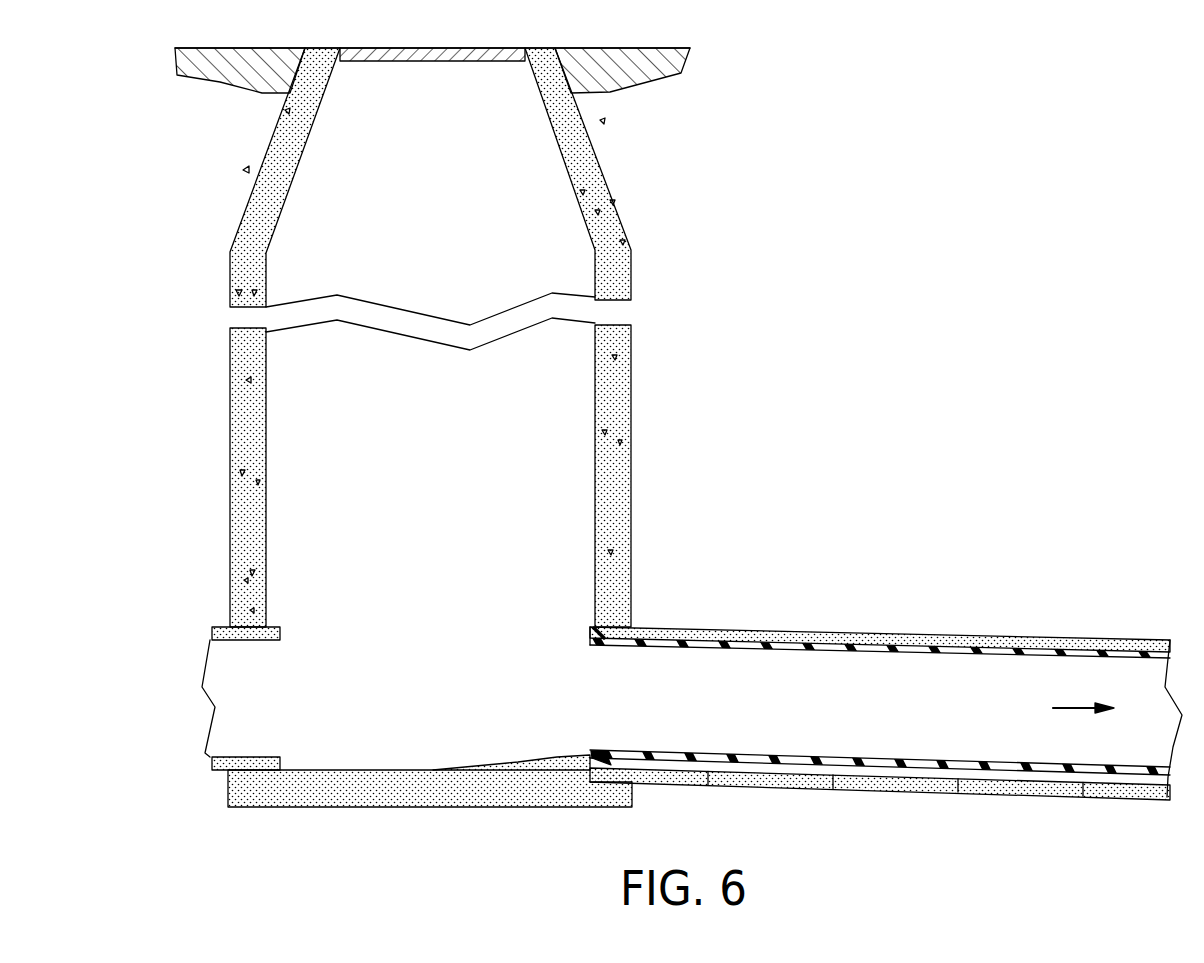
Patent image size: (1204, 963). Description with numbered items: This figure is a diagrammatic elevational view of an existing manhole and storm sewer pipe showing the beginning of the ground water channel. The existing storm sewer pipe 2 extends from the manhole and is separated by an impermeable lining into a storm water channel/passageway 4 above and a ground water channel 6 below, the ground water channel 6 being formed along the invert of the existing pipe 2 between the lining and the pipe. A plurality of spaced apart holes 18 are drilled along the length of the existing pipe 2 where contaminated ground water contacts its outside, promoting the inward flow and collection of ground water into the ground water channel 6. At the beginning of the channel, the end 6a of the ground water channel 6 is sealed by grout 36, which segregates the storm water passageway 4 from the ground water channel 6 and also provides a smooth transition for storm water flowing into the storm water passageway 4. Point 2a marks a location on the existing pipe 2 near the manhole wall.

The existing storm sewer pipe 2 is at (911, 640).
The liner end of upper pipe 2a is at (600, 633).
The storm water channel/passageway 4 is at (858, 715).
The ground water channel 6 is at (733, 766).
The end of ground water channel 6a is at (610, 763).
The spaced apart holes 18 is at (708, 785).
The grout 36 is at (518, 762).